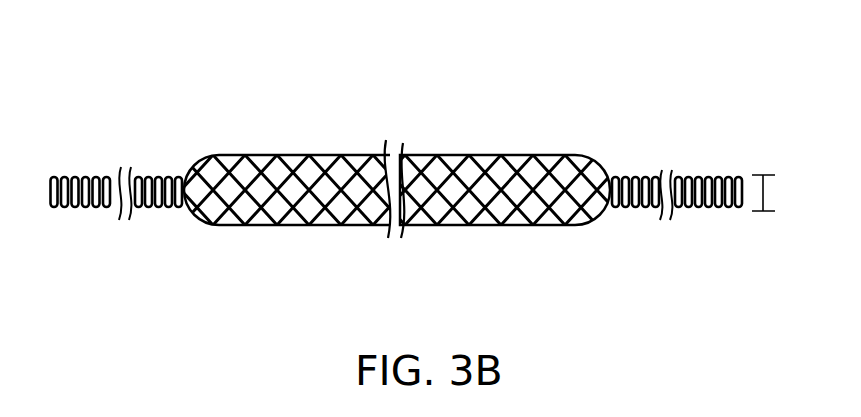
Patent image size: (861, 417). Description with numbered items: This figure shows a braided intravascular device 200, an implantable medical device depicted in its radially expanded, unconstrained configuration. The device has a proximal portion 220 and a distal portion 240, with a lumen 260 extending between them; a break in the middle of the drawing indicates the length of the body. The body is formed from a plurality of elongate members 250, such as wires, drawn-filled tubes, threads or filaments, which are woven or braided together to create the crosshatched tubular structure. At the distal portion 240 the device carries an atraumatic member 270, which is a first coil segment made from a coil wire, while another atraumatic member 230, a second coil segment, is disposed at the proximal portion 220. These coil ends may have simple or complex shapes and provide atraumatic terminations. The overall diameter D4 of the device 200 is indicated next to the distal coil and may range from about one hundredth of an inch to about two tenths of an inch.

The braided intravascular device 200 is at (322, 50).
The proximal portion 220 is at (218, 157).
The atraumatic member 230 is at (73, 176).
The distal portion 240 is at (580, 227).
The elongate members 250 is at (506, 162).
The lumen 260 is at (388, 154).
The atraumatic member 270 is at (718, 208).
The diameter D4 is at (780, 193).